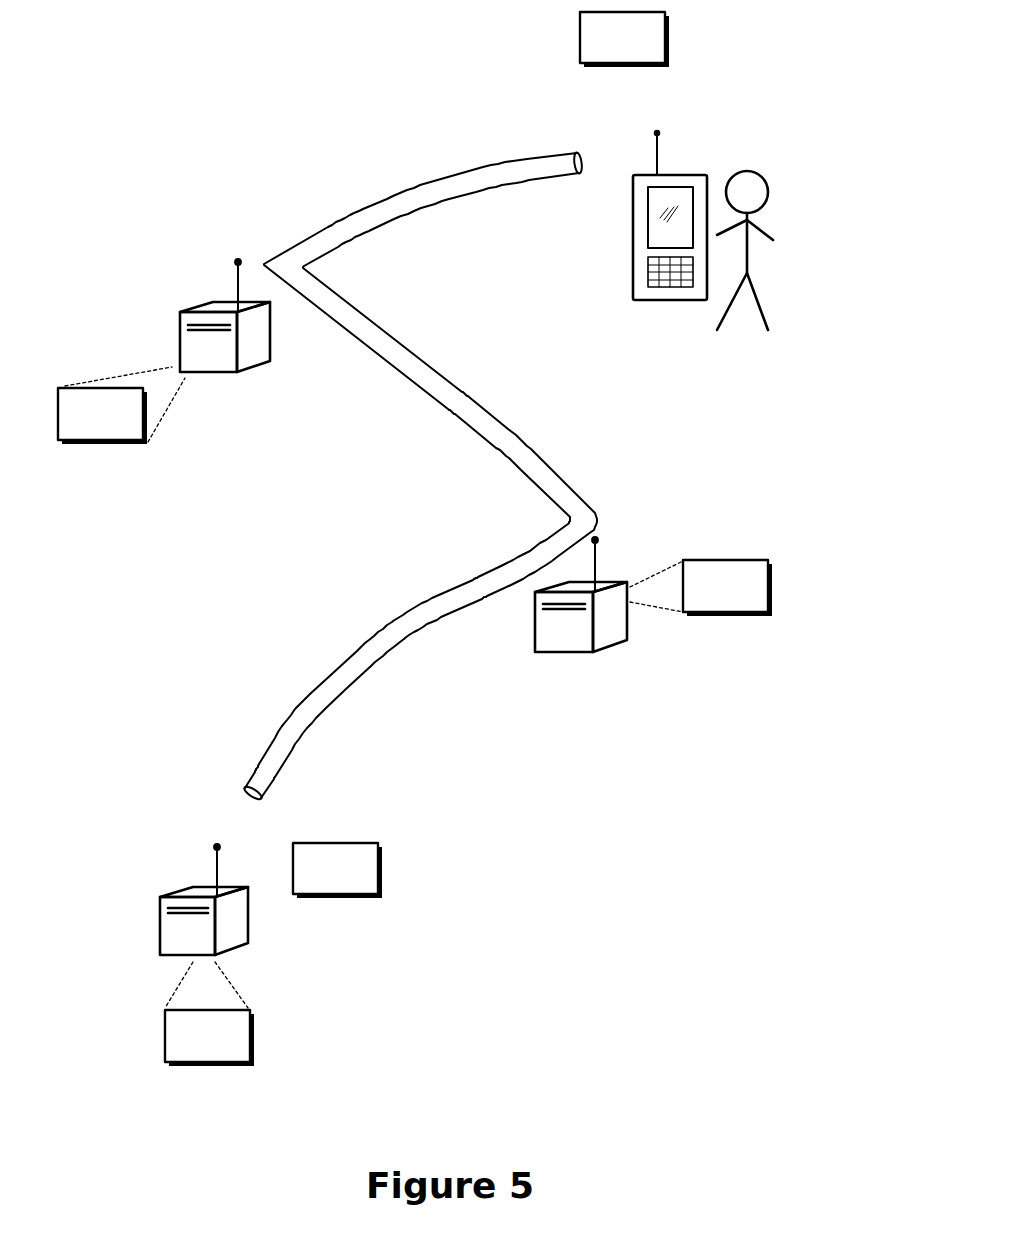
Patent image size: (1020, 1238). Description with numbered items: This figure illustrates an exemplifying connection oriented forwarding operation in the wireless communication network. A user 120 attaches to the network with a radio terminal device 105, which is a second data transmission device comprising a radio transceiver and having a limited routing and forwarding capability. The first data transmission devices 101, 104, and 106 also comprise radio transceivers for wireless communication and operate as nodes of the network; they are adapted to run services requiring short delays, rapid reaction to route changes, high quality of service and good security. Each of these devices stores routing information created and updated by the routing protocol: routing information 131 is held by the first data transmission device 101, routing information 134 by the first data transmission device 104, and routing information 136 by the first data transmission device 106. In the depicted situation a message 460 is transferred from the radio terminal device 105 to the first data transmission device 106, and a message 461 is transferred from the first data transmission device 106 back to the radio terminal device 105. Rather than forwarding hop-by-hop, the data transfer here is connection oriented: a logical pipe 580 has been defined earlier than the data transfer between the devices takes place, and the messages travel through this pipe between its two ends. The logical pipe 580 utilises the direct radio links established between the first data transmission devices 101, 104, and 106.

The logical pipe 580 is at (417, 604).
The message 460 is at (598, 160).
The message 461 is at (255, 820).
The first data transmission device 101 is at (180, 340).
The routing information 131 is at (81, 426).
The first data transmission device 104 is at (580, 652).
The routing information 134 is at (708, 598).
The first data transmission device 106 is at (189, 889).
The routing information 136 is at (189, 1048).
The radio terminal device 105 is at (633, 243).
The user 120 is at (759, 172).